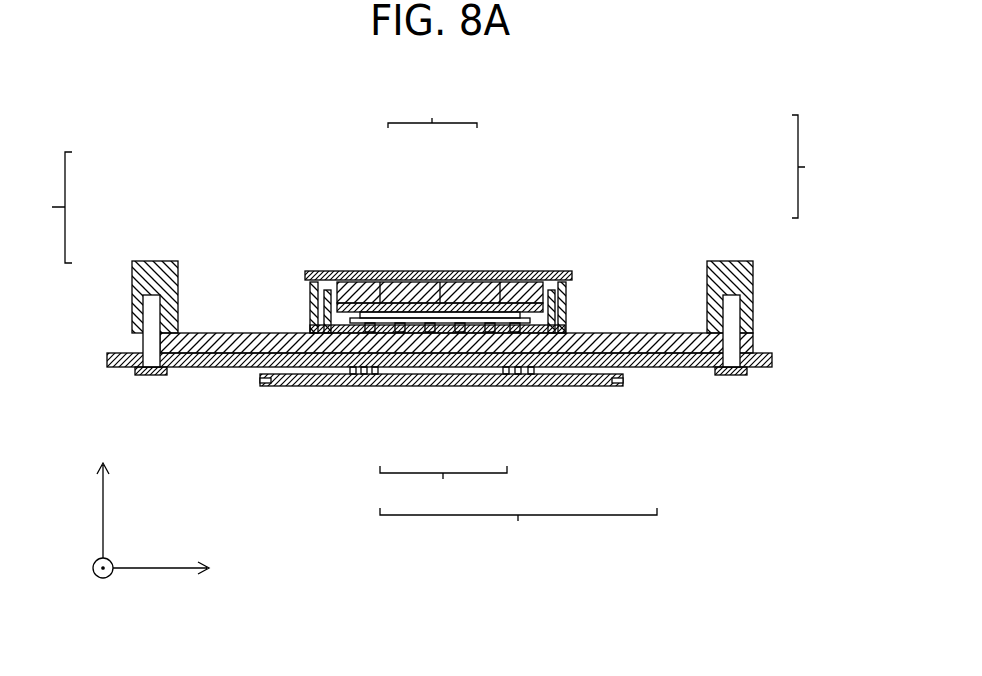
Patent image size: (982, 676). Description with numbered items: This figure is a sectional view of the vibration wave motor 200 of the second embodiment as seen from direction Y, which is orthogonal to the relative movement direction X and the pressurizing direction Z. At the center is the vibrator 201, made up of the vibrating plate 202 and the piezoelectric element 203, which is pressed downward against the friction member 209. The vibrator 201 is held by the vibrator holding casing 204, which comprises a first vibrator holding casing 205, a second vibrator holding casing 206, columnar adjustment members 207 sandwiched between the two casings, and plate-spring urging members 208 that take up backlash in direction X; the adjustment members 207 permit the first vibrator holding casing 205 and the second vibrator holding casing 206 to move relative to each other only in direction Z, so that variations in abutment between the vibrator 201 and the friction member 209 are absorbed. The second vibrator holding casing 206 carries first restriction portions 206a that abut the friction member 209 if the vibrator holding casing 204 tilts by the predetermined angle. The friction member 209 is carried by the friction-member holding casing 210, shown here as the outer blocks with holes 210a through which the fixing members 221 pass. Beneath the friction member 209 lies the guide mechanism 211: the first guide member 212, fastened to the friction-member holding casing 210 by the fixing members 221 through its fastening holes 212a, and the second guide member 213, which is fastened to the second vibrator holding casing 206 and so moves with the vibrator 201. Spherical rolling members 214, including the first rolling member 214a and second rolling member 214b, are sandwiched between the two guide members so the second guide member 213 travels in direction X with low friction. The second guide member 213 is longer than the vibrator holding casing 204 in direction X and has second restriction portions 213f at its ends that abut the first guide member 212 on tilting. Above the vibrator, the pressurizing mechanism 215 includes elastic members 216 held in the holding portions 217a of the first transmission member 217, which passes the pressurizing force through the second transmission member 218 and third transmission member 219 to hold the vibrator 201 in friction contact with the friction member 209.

The vibration wave motor 200 is at (98, 107).
The vibrator 201 is at (440, 209).
The vibrating plate 202 is at (462, 314).
The piezoelectric element 203 is at (440, 305).
The vibrator holding casing 204 is at (532, 224).
The first vibrator holding casing 205 is at (571, 276).
The second vibrator holding casing 206 is at (500, 263).
The first restriction portions 206a is at (322, 322).
The adjustment members 207 is at (568, 290).
The urging members 208 is at (566, 300).
The friction member 209 is at (720, 345).
The friction-member holding casing 210 is at (493, 296).
The hole of holder 210a is at (731, 312).
The guide mechanism 211 is at (505, 462).
The first guide member 212 is at (505, 419).
The fastening holes 212a is at (745, 358).
The second guide member 213 is at (557, 385).
The second restriction portions 213f is at (265, 385).
The rolling members 214 is at (442, 439).
The first rolling member 214a is at (365, 385).
The second rolling member 214b is at (520, 385).
The pressurizing mechanism 215 is at (335, 221).
The elastic members 216 is at (320, 300).
The first transmission member 217 is at (312, 276).
The holding portions 217a is at (562, 272).
The second transmission member 218 is at (316, 288).
The third transmission member 219 is at (322, 312).
The fixing members 221 is at (752, 305).